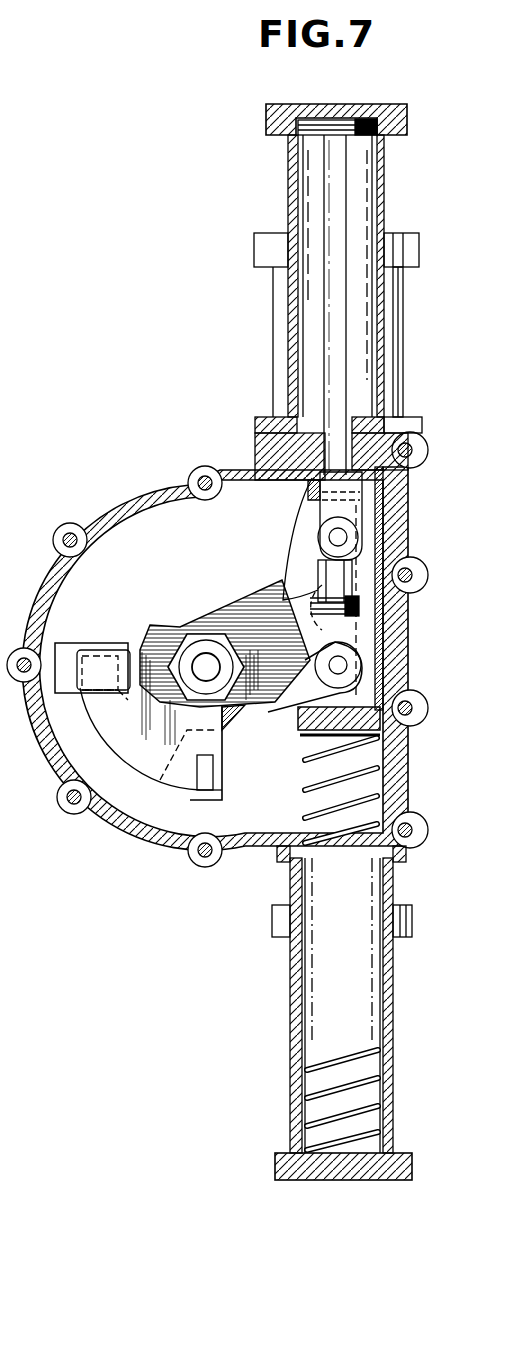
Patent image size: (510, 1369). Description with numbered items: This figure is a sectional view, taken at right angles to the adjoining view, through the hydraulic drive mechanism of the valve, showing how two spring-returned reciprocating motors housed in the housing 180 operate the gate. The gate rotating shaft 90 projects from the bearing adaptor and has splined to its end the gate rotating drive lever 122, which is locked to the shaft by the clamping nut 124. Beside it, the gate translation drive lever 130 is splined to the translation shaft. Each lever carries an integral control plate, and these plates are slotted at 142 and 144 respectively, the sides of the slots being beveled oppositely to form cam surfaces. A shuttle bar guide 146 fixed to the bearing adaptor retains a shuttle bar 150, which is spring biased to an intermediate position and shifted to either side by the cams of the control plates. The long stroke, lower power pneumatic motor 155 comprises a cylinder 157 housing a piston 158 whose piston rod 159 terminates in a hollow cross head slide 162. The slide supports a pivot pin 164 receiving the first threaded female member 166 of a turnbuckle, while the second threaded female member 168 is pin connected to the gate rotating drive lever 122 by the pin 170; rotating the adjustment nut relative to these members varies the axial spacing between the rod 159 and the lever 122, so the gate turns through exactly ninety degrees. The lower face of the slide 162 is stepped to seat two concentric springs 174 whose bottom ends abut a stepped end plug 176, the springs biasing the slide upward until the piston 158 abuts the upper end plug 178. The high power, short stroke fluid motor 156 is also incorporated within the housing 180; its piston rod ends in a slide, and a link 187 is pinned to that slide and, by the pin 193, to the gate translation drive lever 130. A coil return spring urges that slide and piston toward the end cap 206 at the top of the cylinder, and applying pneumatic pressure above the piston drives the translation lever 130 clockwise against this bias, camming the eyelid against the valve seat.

The gate rotating shaft 90 is at (200, 672).
The gate rotating drive lever 122 is at (291, 706).
The clamping nut 124 is at (203, 692).
The gate translation drive lever 130 is at (250, 602).
The slot 142 is at (214, 780).
The slot 144 is at (88, 700).
The shuttle bar guide 146 is at (70, 643).
The shuttle bar 150 is at (118, 702).
The pneumatic motor 155 is at (281, 176).
The fluid motor 156 is at (408, 296).
The cylinder 157 is at (383, 325).
The piston 158 is at (365, 145).
The piston rod 159 is at (345, 385).
The cross head slide 162 is at (385, 642).
The pivot pin 164 is at (346, 532).
The first threaded female member 166 is at (360, 563).
The second threaded female member 168 is at (384, 655).
The pin 170 is at (348, 667).
The concentric springs 174 is at (385, 772).
The end plug 176 is at (362, 603).
The upper end plug 178 is at (353, 104).
The housing 180 is at (167, 842).
The link 187 is at (300, 530).
The pin 193 is at (312, 605).
The end cap 206 is at (398, 233).